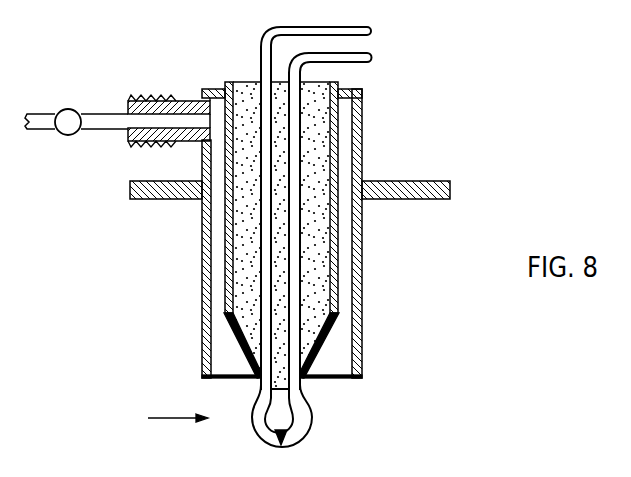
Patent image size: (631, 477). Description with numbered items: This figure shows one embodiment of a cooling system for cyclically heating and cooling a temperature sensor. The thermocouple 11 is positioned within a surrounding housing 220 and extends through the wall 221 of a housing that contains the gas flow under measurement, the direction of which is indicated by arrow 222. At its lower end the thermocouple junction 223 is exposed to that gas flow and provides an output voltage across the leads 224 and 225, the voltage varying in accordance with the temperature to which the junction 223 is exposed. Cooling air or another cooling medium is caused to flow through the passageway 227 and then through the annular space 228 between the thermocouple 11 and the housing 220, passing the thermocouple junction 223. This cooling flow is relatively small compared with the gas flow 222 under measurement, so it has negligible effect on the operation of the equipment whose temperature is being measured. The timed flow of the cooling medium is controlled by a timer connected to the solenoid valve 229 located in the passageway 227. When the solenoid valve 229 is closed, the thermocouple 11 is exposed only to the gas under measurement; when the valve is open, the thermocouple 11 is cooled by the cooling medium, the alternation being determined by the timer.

The thermocouple 11 is at (333, 262).
The surrounding housing 220 is at (362, 312).
The wall 221 is at (410, 186).
The gas flow under measurement 222 is at (170, 417).
The thermocouple junction 223 is at (286, 437).
The lead 224 is at (268, 42).
The lead 225 is at (348, 62).
The passageway 227 is at (146, 128).
The annular space 228 is at (222, 291).
The solenoid valve 229 is at (73, 109).